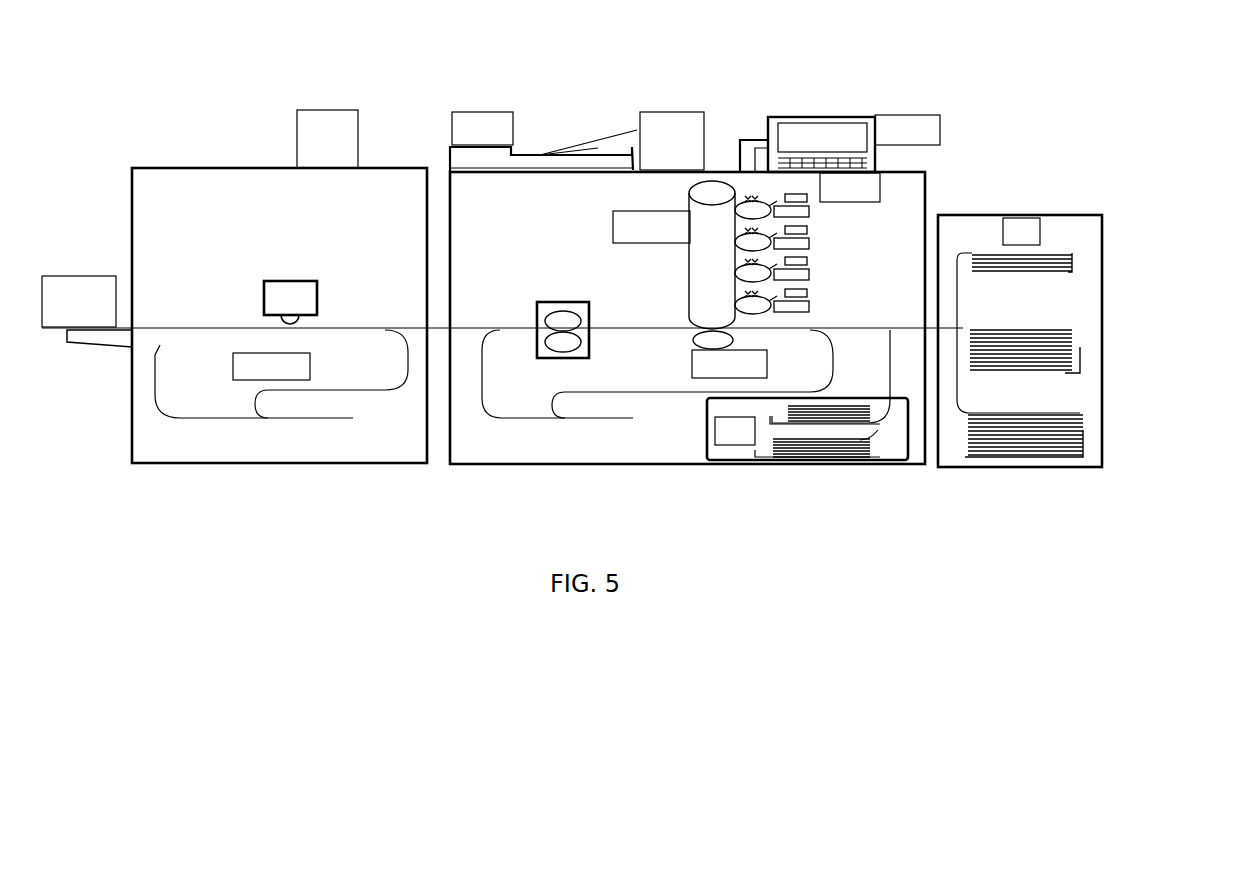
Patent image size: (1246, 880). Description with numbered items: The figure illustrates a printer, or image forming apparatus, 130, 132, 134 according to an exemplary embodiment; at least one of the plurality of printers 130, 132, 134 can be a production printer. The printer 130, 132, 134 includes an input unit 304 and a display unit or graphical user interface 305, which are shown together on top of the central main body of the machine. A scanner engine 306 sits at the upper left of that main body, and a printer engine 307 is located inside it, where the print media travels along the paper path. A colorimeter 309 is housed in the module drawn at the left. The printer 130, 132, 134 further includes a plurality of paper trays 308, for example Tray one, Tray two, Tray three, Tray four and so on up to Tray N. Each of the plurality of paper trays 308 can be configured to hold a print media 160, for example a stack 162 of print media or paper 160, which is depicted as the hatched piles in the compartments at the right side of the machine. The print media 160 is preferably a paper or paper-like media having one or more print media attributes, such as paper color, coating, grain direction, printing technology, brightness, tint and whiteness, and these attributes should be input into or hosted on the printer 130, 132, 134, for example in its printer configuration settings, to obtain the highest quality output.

The printer 130 is at (909, 61).
The printer 132 is at (637, 251).
The printer 134 is at (637, 251).
The input unit 304 is at (807, 132).
The display unit 305 is at (807, 132).
The scanner engine 306 is at (482, 128).
The printer engine 307 is at (567, 315).
The paper trays 308 is at (824, 449).
The colorimeter 309 is at (290, 289).
The print media 160 is at (1104, 352).
The stack 162 is at (1094, 412).